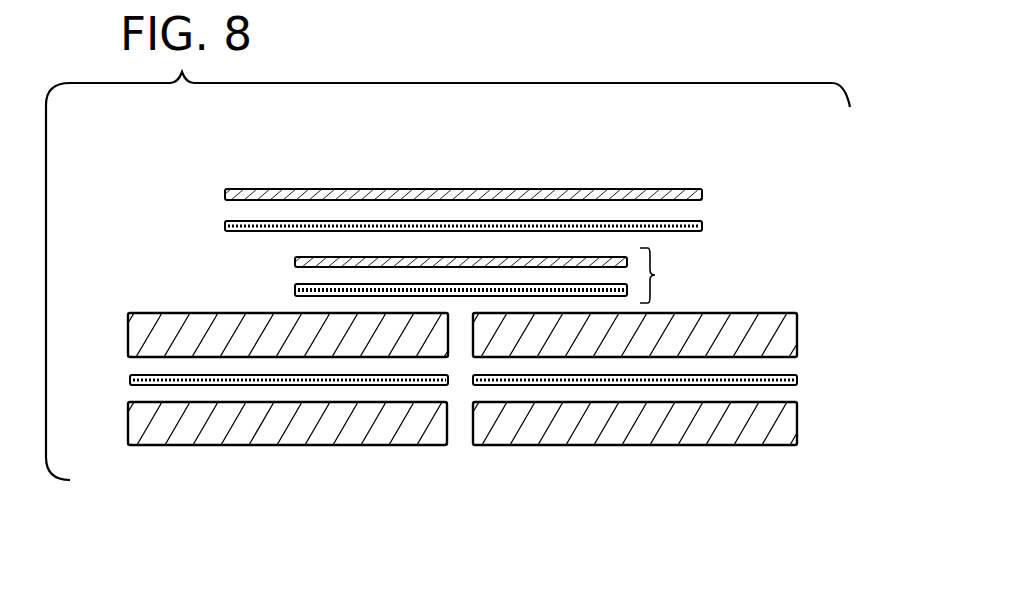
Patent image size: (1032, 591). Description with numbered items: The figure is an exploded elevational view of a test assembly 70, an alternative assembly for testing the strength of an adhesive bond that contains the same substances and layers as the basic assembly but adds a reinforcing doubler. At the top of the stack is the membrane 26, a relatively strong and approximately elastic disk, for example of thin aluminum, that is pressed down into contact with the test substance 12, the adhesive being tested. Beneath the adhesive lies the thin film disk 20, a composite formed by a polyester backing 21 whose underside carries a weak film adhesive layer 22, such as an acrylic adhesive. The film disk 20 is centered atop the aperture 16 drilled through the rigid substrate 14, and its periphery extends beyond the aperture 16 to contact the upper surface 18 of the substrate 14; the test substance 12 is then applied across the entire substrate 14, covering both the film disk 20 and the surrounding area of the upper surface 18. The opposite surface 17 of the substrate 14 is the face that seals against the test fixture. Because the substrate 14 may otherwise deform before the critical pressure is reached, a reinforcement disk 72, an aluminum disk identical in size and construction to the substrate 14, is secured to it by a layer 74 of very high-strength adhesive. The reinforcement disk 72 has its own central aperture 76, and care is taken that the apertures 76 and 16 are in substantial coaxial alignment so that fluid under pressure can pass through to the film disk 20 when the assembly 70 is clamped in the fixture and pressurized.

The test assembly 70 is at (760, 155).
The membrane 26 is at (597, 186).
The test substance 12 is at (714, 228).
The polyester backing 21 is at (300, 257).
The weak film adhesive layer 22 is at (295, 290).
The thin film disk 20 is at (663, 275).
The substrate 14 is at (806, 331).
The aperture 16 is at (449, 326).
The upper surface 18 is at (165, 311).
The surface 17 is at (149, 352).
The adhesive layer 74 is at (797, 381).
The reinforcement disk 72 is at (806, 435).
The aperture 76 is at (449, 420).